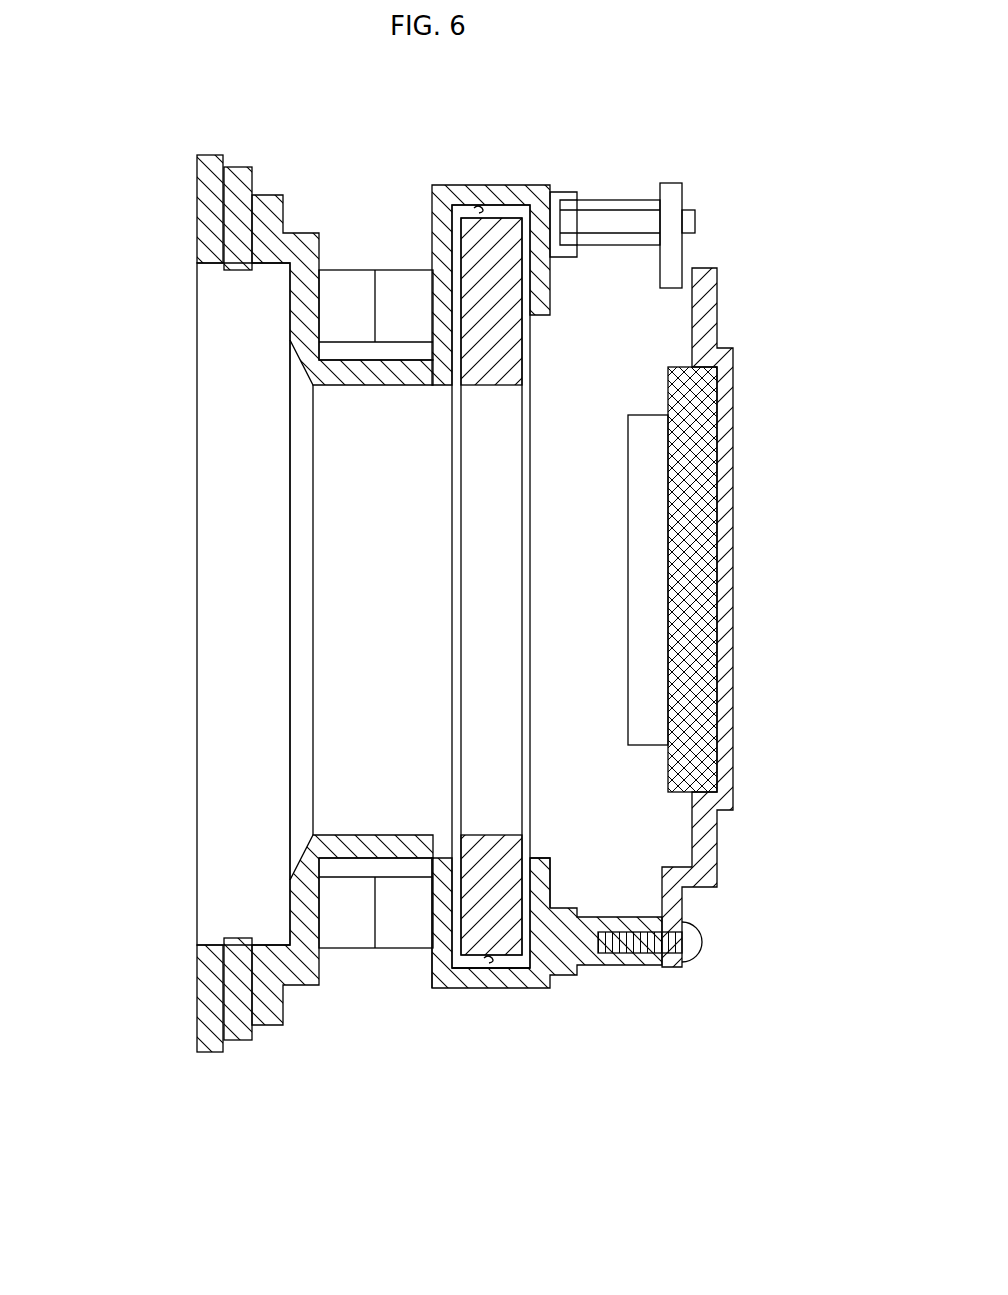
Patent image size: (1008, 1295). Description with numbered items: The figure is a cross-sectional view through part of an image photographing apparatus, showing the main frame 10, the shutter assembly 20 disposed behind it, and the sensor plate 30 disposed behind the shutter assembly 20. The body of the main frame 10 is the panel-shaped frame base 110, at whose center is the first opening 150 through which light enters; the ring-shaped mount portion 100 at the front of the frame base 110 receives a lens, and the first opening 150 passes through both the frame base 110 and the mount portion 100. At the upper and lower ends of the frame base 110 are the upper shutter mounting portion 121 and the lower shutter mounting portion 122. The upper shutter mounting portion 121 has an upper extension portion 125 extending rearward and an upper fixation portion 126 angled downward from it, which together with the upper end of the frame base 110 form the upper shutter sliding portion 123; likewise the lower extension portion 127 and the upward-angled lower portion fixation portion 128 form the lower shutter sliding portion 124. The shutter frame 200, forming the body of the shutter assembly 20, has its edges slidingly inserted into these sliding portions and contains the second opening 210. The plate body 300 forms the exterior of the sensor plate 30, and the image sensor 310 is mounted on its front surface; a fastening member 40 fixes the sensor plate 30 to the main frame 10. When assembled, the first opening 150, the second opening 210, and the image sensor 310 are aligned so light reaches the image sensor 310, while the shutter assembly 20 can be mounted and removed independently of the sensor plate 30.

The main frame 10 is at (335, 197).
The shutter assembly 20 is at (550, 337).
The sensor plate 30 is at (758, 530).
The fastening member 40 is at (701, 945).
The mount portion 100 is at (236, 1036).
The frame base 110 is at (435, 962).
The upper shutter mounting portion 121 is at (493, 165).
The lower shutter mounting portion 122 is at (554, 1004).
The upper shutter sliding portion 123 is at (477, 206).
The lower shutter sliding portion 124 is at (490, 966).
The upper extension portion 125 is at (524, 190).
The upper fixation portion 126 is at (548, 288).
The lower extension portion 127 is at (503, 966).
The lower portion fixation portion 128 is at (552, 885).
The first opening 150 is at (232, 642).
The shutter frame 200 is at (520, 846).
The second opening 210 is at (484, 545).
The plate body 300 is at (710, 342).
The image sensor 310 is at (692, 688).